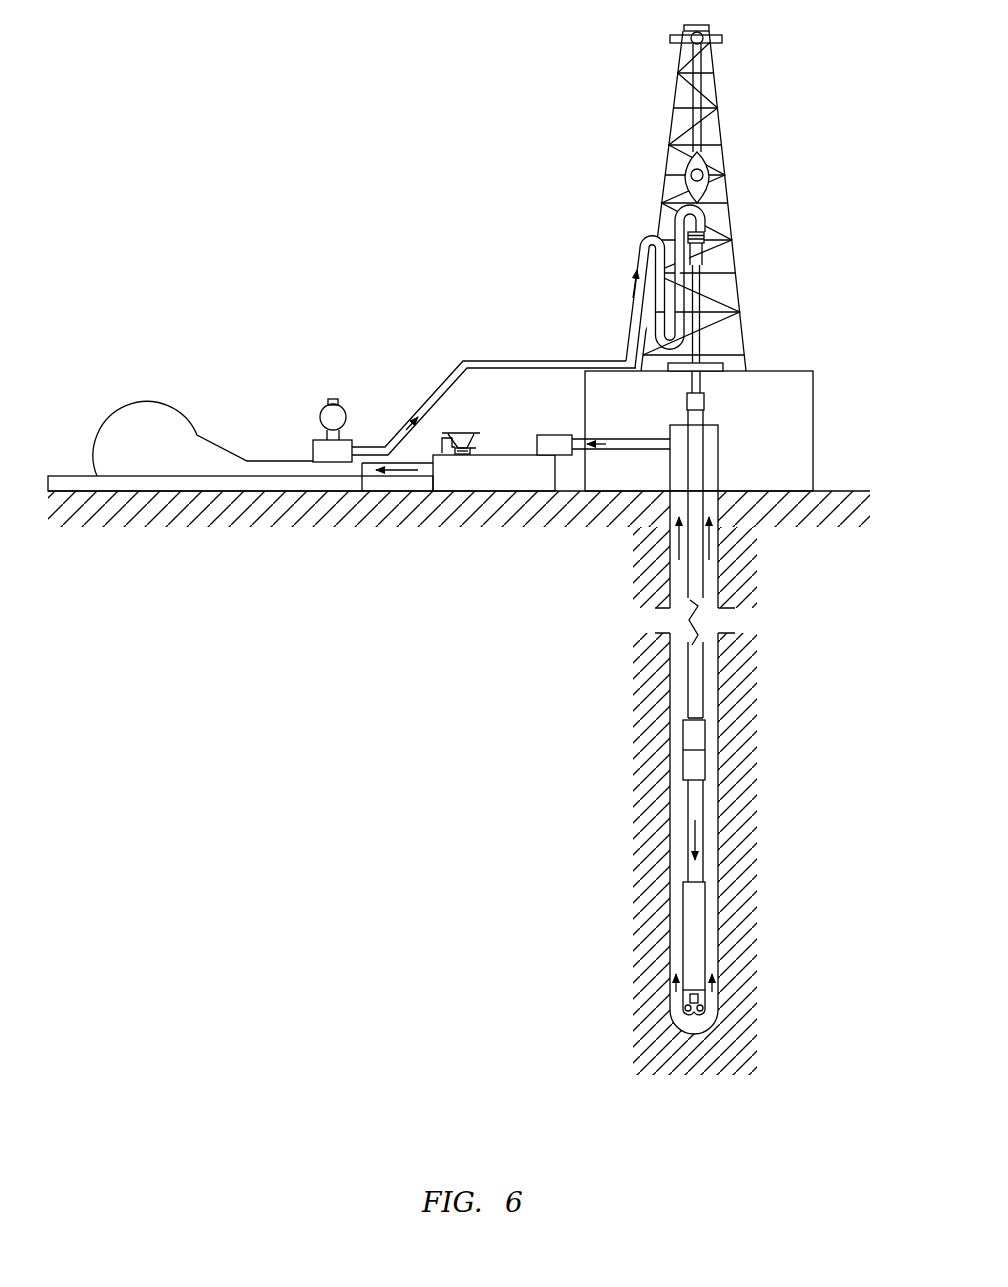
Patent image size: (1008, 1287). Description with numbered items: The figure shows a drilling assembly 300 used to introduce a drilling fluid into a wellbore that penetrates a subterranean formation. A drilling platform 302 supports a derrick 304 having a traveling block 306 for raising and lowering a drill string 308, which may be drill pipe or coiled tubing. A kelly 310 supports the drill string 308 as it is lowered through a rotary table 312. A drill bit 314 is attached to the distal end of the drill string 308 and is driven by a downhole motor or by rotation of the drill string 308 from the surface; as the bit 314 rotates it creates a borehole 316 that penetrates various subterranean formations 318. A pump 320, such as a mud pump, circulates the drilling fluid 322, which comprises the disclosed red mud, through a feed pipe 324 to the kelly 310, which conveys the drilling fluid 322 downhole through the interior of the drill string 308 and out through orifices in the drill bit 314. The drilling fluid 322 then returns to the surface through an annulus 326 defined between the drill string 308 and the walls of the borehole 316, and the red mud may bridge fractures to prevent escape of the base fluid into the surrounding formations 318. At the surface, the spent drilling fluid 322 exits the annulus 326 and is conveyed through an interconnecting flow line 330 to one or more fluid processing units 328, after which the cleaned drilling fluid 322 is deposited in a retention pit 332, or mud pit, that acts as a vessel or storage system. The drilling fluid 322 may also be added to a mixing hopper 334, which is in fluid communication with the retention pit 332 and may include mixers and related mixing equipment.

The drilling assembly 300 is at (371, 116).
The drilling platform 302 is at (815, 384).
The derrick 304 is at (722, 123).
The traveling block 306 is at (712, 163).
The drill string 308 is at (698, 590).
The kelly 310 is at (697, 285).
The rotary table 312 is at (724, 368).
The drill bit 314 is at (705, 1005).
The borehole 316 is at (718, 700).
The subterranean formations 318 is at (584, 784).
The pump 320 is at (156, 460).
The drilling fluid 322 is at (372, 448).
The feed pipe 324 is at (480, 361).
The annulus 326 is at (712, 847).
The fluid processing unit 328 is at (548, 435).
The interconnecting flow line 330 is at (650, 455).
The retention pit 332 is at (530, 482).
The mixing hopper 334 is at (463, 455).